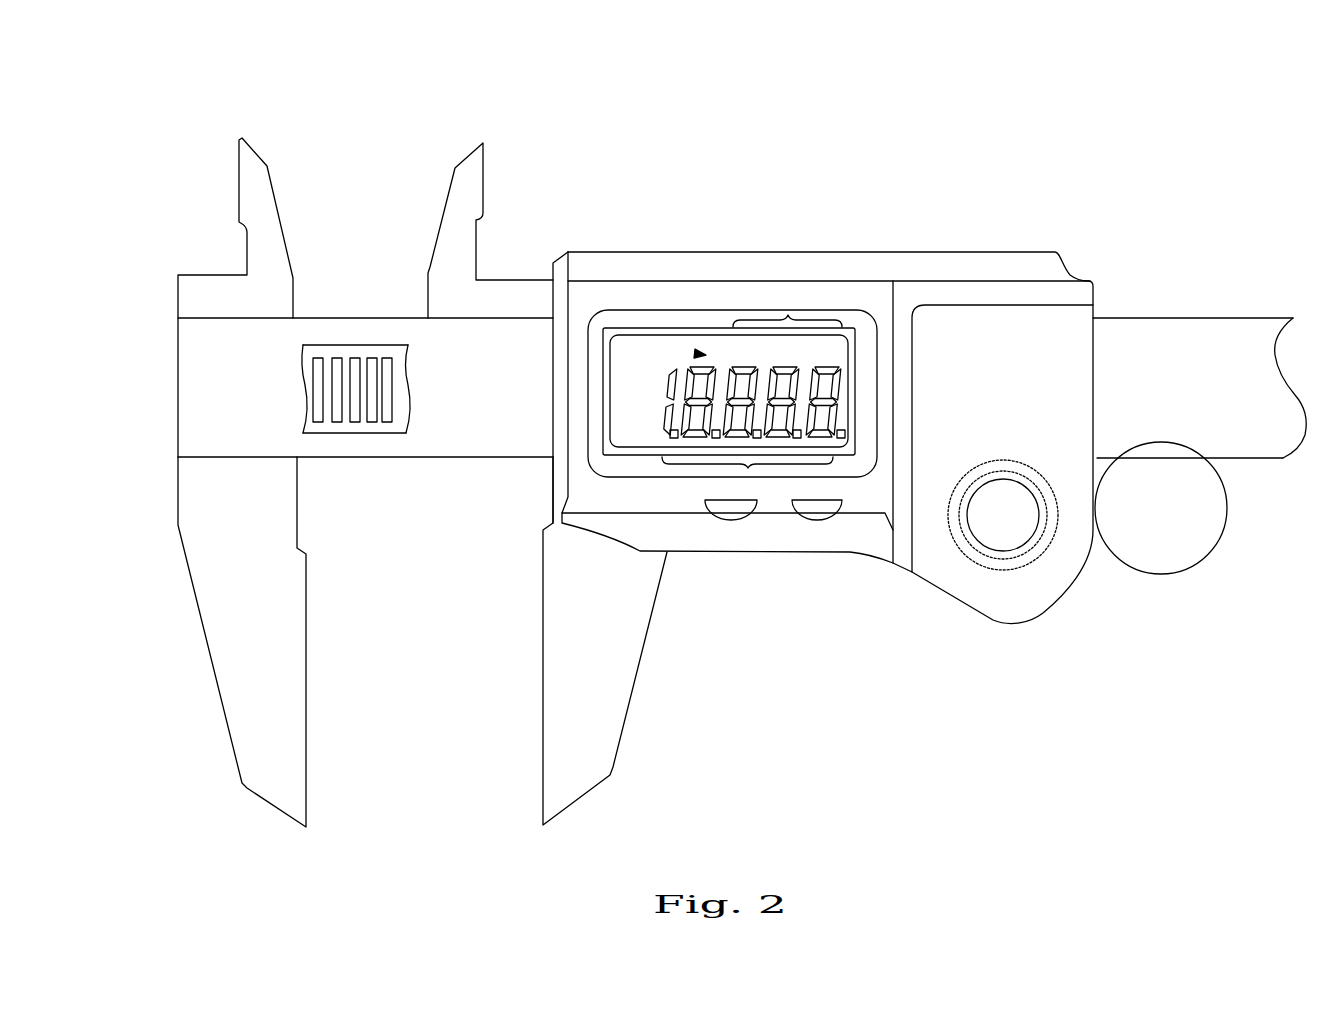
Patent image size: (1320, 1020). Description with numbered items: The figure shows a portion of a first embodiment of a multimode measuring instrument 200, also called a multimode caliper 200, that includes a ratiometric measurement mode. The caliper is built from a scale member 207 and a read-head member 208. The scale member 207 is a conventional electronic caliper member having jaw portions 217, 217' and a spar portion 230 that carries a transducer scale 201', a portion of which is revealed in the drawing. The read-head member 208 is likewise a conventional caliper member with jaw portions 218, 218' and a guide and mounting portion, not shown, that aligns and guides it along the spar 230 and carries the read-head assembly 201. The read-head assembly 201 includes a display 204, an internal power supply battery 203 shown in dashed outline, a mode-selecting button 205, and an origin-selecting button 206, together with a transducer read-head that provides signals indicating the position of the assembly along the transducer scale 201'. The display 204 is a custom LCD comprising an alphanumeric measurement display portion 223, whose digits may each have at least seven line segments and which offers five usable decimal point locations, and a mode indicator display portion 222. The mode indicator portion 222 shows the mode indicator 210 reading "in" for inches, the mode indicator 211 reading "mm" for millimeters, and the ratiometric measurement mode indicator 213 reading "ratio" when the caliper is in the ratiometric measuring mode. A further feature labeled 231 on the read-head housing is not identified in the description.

The multimode measuring instrument 200 is at (1176, 161).
The read-head assembly 201 is at (856, 465).
The transducer scale 201' is at (363, 426).
The power supply battery 203 is at (1005, 460).
The display 204 is at (568, 382).
The mode-selecting button 205 is at (730, 522).
The origin-selecting button 206 is at (807, 522).
The scale member 207 is at (387, 221).
The read-head member 208 is at (508, 749).
The mode indicator 210 is at (698, 352).
The mode indicator 211 is at (775, 330).
The ratiometric measurement mode indicator 213 is at (817, 330).
The jaw portion 217 is at (277, 642).
The jaw portion 217' is at (268, 228).
The jaw portion 218 is at (570, 641).
The jaw portion 218' is at (495, 230).
The mode indicator display portion 222 is at (800, 321).
The alphanumeric measurement display portion 223 is at (667, 470).
The spar portion 230 is at (177, 391).
The housing cover 231 is at (922, 252).